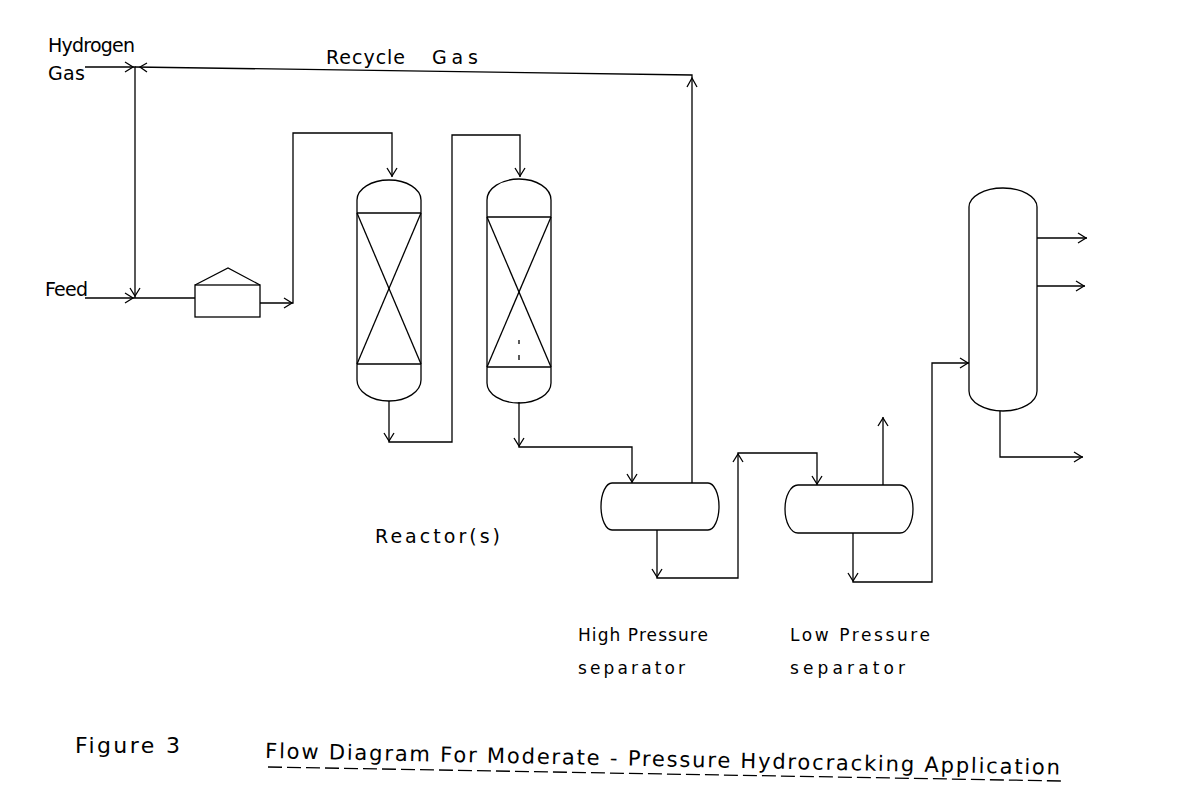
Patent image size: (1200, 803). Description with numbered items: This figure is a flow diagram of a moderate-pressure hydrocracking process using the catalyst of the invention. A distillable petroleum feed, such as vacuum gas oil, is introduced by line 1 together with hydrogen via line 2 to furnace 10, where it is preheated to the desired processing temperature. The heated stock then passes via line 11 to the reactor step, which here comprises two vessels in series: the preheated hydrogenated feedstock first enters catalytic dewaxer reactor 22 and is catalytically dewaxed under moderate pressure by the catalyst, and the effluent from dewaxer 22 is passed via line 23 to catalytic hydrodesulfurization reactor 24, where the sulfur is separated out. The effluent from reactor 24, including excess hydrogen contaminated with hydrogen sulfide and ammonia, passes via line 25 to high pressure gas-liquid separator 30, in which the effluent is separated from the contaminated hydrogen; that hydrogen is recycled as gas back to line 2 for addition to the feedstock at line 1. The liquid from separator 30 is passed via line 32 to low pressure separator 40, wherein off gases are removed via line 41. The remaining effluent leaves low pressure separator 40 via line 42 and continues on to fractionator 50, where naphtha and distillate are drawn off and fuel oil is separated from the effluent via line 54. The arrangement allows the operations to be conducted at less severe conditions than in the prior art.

The line 1 is at (140, 315).
The line 2 is at (125, 180).
The furnace 10 is at (227, 293).
The line 11 is at (328, 220).
The catalytic dewaxer reactor 22 is at (389, 290).
The line 23 is at (454, 288).
The catalytic hydrodesulfurization reactor 24 is at (519, 291).
The line 25 is at (575, 442).
The high pressure gas-liquid separator 30 is at (660, 506).
The line 32 is at (737, 515).
The low pressure separator 40 is at (849, 509).
The line 41 is at (892, 427).
The line 42 is at (908, 471).
The fractionator 50 is at (1079, 299).
The line 54 is at (1082, 438).